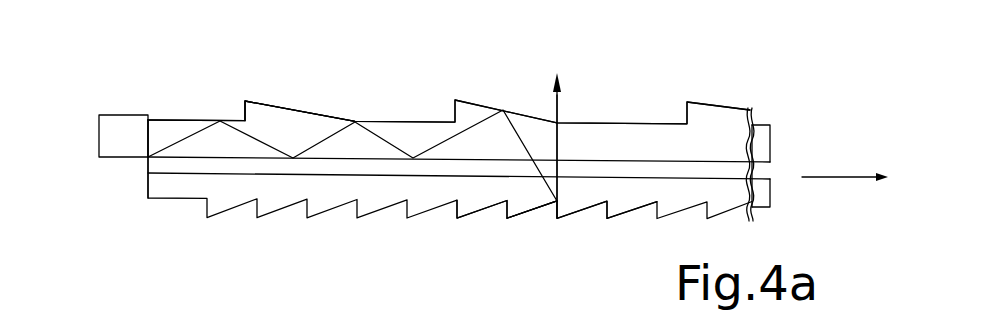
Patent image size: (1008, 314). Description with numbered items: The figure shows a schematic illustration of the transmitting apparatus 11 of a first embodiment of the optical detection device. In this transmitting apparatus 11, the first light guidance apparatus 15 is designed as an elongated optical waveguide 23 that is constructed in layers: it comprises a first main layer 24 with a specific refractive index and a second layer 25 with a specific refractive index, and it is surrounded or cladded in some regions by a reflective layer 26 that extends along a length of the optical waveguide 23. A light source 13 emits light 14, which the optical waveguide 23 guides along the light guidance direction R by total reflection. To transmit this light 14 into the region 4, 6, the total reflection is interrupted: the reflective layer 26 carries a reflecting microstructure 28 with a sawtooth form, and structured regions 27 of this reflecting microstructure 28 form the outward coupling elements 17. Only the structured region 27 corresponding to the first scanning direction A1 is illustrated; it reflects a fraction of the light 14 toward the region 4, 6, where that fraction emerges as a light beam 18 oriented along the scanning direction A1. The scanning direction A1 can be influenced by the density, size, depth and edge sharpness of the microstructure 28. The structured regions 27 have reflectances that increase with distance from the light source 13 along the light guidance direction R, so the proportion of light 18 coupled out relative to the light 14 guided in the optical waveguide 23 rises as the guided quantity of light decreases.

The region 4 is at (437, 65).
The region 6 is at (449, 82).
The transmitting apparatus 11 is at (118, 88).
The light source 13 is at (110, 133).
The light 14 is at (182, 137).
The first light guidance apparatus 15 is at (781, 108).
The outward coupling elements 17 is at (540, 222).
The light beam 18 is at (558, 102).
The optical waveguide 23 is at (263, 98).
The first main layer 24 is at (762, 142).
The second layer 25 is at (770, 167).
The reflective layer 26 is at (770, 192).
The structured regions 27 is at (522, 215).
The reflecting microstructure 28 is at (596, 200).
The first scanning direction A1 is at (577, 62).
The light guidance direction R is at (857, 175).